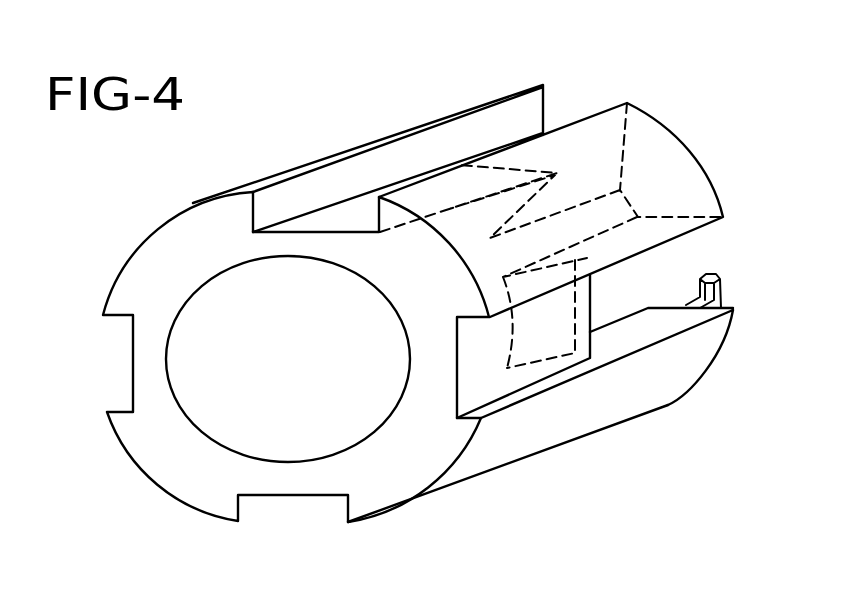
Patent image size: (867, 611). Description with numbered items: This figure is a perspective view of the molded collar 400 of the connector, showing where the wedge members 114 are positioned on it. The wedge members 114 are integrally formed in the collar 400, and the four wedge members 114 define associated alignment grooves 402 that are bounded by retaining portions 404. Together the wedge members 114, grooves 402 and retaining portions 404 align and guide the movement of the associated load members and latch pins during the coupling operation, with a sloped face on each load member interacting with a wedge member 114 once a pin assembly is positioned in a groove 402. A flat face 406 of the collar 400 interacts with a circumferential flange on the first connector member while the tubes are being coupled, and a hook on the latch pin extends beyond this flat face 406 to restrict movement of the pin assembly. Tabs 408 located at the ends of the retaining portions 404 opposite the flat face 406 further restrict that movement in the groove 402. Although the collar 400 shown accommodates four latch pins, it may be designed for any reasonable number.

The collar 400 is at (414, 86).
The alignment grooves 402 is at (133, 350).
The retaining portions 404 is at (301, 171).
The flat face 406 is at (395, 490).
The tabs 408 is at (722, 287).
The wedge members 114 is at (557, 174).